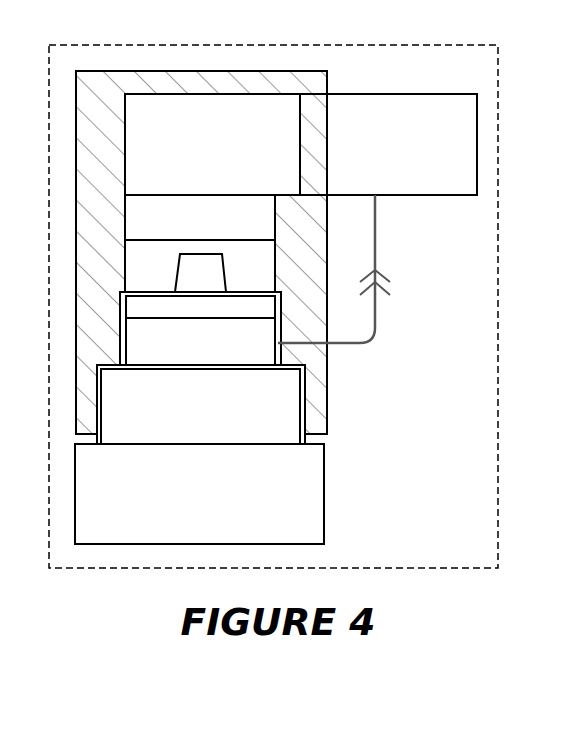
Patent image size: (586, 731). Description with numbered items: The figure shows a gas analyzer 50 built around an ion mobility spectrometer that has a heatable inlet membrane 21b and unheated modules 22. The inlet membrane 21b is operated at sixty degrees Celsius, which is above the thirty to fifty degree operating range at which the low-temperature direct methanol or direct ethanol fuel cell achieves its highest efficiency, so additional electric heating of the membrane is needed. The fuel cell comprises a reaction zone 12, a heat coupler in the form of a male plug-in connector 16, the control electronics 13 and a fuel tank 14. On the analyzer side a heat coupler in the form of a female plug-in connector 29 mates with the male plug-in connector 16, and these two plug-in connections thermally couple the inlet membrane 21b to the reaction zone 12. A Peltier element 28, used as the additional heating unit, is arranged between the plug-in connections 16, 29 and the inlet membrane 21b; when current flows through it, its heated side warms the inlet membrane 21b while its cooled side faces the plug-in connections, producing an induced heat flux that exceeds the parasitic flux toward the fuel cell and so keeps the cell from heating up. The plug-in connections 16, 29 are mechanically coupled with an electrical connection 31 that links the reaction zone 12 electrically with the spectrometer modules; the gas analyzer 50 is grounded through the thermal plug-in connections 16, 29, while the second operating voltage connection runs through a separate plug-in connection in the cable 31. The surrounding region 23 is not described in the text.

The reaction zone 12 is at (200, 341).
The control electronics 13 is at (201, 404).
The fuel tank 14 is at (199, 494).
The male plug-in connector 16 is at (200, 309).
The heatable inlet membrane 21b is at (212, 144).
The unheated modules 22 is at (388, 144).
The insulating layer 23 is at (201, 252).
The Peltier element 28 is at (200, 217).
The female plug-in connector 29 is at (200, 266).
The electrical connection 31 is at (376, 210).
The gas analyzer 50 is at (273, 306).